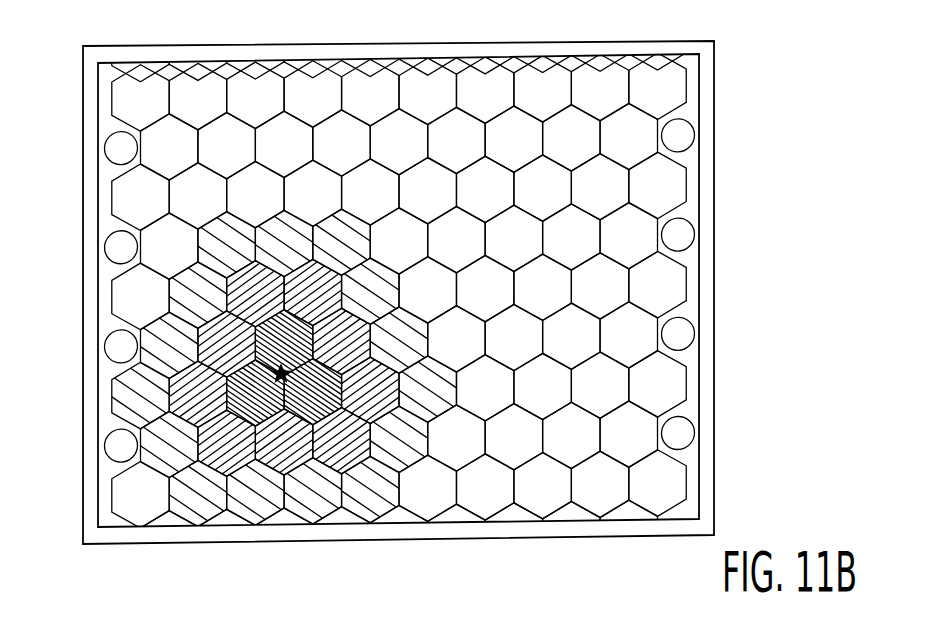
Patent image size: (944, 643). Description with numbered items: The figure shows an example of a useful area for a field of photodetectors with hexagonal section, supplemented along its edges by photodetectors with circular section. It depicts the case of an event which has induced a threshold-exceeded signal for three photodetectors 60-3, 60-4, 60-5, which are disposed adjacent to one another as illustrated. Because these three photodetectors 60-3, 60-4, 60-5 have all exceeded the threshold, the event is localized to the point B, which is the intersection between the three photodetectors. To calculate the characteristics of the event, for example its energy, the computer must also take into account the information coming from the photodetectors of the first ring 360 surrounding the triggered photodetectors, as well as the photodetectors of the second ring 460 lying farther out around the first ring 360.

The photodetector 60-3 is at (248, 420).
The photodetector 60-4 is at (313, 410).
The photodetector 60-5 is at (266, 326).
The first ring 360 is at (195, 397).
The second ring 460 is at (402, 430).
The point B is at (290, 375).